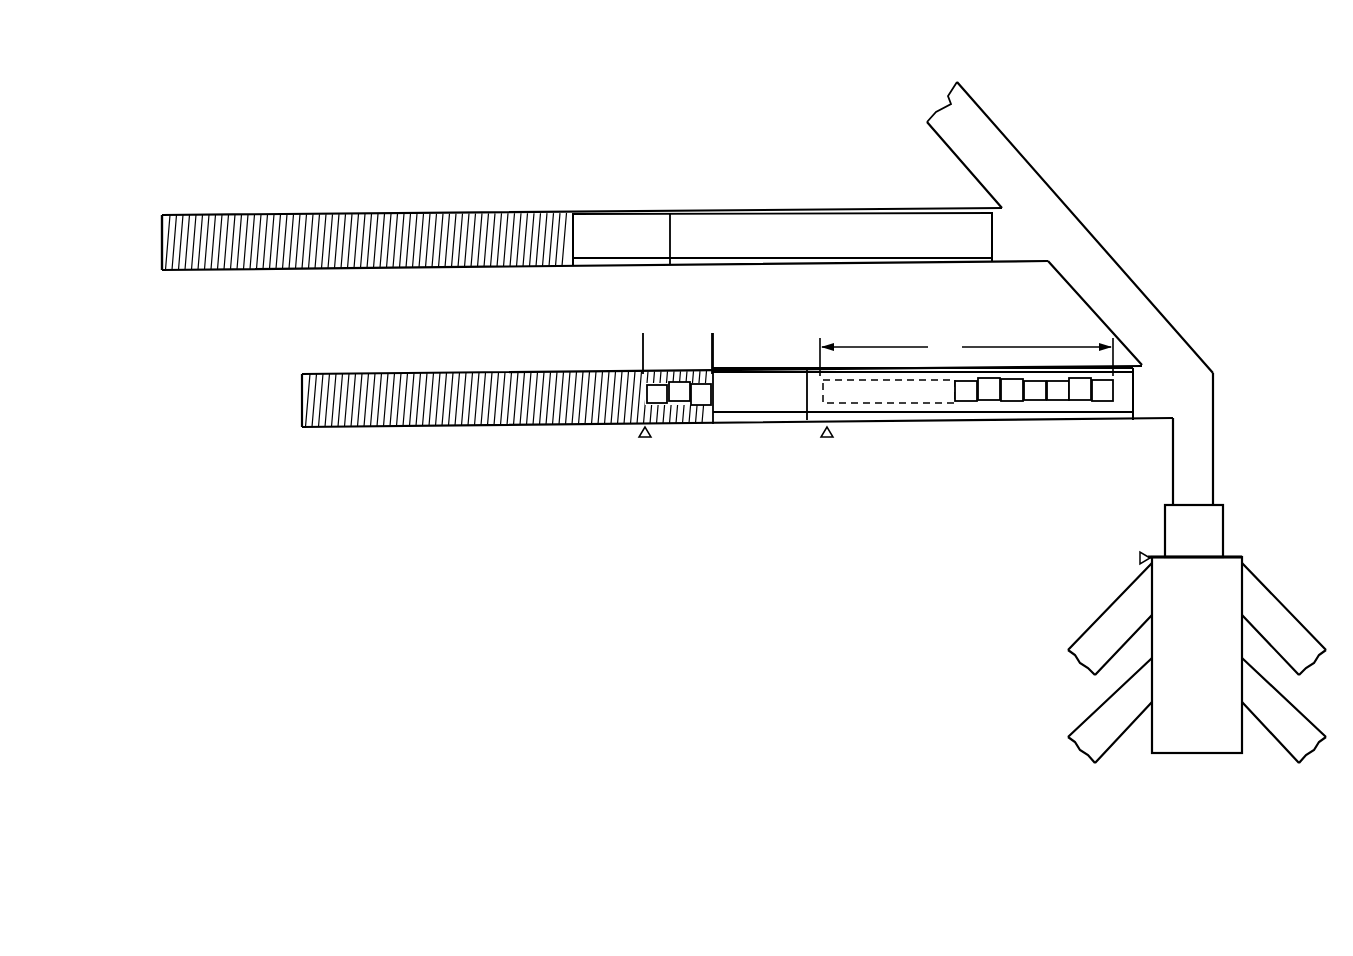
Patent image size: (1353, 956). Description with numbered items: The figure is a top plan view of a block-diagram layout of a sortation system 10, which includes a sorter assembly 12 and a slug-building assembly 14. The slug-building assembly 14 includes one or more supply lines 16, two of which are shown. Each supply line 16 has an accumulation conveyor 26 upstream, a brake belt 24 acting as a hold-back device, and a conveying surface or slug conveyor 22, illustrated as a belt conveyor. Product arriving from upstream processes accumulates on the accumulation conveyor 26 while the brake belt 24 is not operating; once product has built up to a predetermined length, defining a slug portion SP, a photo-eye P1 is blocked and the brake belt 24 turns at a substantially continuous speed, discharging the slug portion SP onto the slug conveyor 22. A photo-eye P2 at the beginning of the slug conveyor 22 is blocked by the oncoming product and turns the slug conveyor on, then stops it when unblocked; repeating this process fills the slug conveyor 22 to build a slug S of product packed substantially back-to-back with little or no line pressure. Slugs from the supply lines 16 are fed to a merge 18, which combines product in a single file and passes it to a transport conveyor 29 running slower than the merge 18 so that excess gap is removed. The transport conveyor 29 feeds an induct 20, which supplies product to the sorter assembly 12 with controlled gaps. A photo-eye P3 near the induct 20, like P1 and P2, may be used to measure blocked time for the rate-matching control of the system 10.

The sortation system 10 is at (643, 558).
The sorter assembly 12 is at (1237, 756).
The slug-building assembly 14 is at (460, 206).
The supply line 16 is at (152, 233).
The merge 18 is at (1158, 306).
The induct 20 is at (1225, 532).
The conveying surface (slug conveyor) 22 is at (750, 210).
The brake belt 24 is at (604, 210).
The accumulation conveyor 26 is at (305, 214).
The transport conveyor 29 is at (1216, 458).
The slug S is at (966, 356).
The slug portion SP is at (677, 369).
The photo-eye P1 is at (645, 437).
The photo-eye P2 is at (827, 437).
The photo-eye P3 is at (1139, 558).